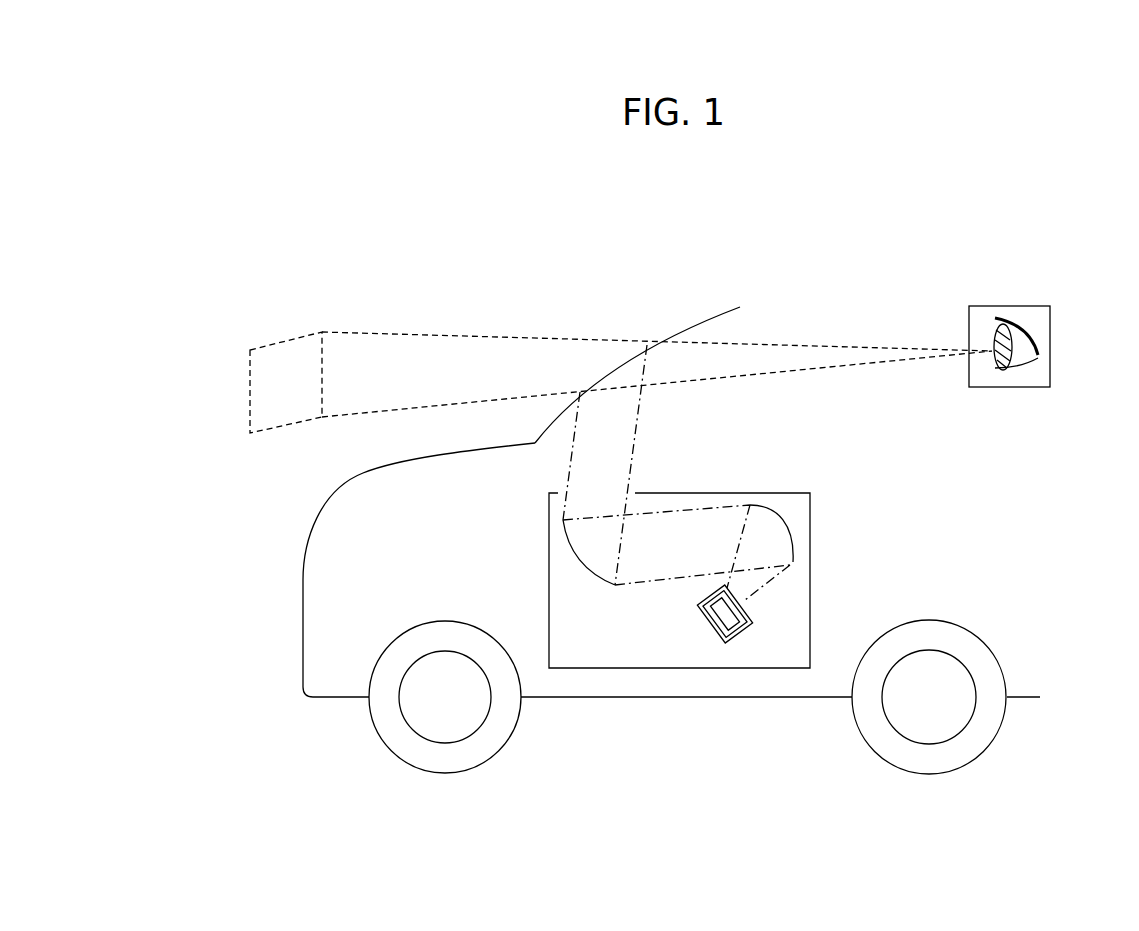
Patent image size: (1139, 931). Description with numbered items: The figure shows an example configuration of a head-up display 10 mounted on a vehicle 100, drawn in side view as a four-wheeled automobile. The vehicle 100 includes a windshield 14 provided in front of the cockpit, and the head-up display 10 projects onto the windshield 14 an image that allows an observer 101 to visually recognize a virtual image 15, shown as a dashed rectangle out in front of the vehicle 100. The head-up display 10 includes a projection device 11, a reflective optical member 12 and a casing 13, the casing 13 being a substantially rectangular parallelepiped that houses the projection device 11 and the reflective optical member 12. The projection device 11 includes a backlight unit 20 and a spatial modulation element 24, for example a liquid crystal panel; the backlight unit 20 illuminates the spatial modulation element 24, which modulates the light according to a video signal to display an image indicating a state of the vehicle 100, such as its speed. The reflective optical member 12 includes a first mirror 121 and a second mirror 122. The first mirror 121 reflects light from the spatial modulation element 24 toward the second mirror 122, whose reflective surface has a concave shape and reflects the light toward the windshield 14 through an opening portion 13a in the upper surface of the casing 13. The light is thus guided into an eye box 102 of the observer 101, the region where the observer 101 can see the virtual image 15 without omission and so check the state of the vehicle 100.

The vehicle 100 is at (610, 305).
The windshield 14 is at (693, 325).
The virtual image 15 is at (282, 427).
The observer 101 is at (1033, 335).
The eye box 102 is at (997, 306).
The head-up display 10 is at (763, 478).
The casing 13 is at (797, 492).
The opening portion 13a is at (590, 490).
The reflective optical member 12 is at (790, 589).
The first mirror 121 is at (793, 532).
The second mirror 122 is at (568, 562).
The projection device 11 is at (707, 617).
The backlight unit 20 is at (733, 643).
The spatial modulation element 24 is at (748, 632).